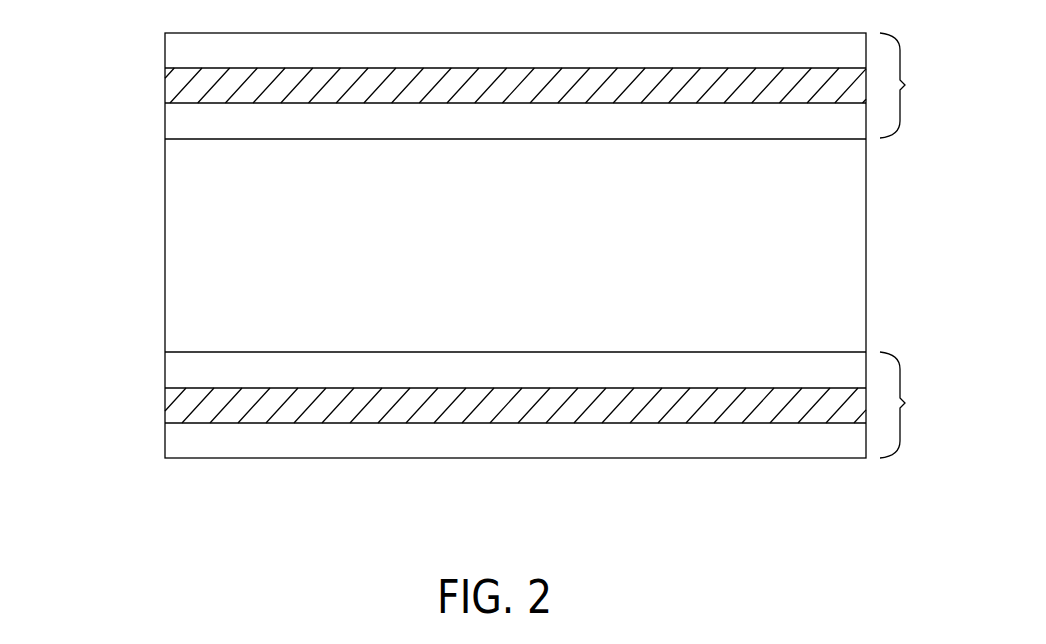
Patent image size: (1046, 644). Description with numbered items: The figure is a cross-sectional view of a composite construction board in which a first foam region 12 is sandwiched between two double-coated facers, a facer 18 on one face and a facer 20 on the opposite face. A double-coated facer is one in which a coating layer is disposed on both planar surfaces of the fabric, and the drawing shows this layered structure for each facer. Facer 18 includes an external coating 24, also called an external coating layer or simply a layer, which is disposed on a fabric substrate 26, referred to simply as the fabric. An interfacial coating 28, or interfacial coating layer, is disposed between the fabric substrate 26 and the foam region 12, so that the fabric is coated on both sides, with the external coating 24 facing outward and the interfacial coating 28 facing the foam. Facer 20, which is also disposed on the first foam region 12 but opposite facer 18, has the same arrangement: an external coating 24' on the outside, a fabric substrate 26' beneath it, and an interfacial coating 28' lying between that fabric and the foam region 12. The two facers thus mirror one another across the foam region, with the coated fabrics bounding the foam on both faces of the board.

The first foam region 12 is at (842, 240).
The facer 18 is at (909, 85).
The facer 20 is at (908, 405).
The external coating 24 is at (454, 55).
The fabric substrate 26 is at (456, 85).
The interfacial coating 28 is at (458, 126).
The external coating 24' is at (462, 439).
The fabric substrate 26' is at (459, 405).
The interfacial coating 28' is at (459, 366).